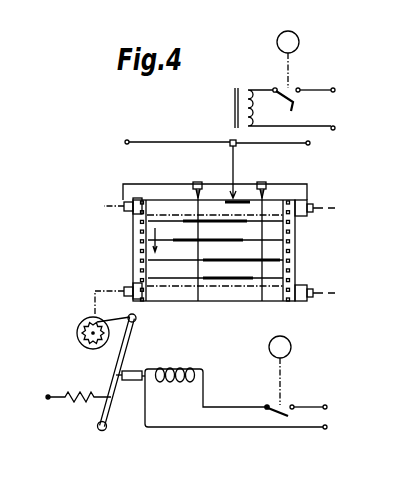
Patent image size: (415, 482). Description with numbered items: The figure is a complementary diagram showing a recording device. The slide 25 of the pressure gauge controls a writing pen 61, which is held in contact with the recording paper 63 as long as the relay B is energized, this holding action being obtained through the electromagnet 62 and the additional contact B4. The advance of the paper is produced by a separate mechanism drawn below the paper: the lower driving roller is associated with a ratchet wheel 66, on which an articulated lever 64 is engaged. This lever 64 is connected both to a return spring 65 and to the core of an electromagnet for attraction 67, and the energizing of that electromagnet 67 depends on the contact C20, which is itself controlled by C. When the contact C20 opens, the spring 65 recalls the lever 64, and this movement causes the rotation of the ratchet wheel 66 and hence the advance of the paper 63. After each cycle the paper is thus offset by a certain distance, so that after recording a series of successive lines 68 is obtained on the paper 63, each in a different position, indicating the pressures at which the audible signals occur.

The relay B is at (279, 43).
The additional contact B4 is at (304, 111).
The electromagnet 62 is at (234, 102).
The slide 25 is at (230, 140).
The writing pen 61 is at (236, 165).
The recording paper 63 is at (270, 232).
The lines 68 is at (189, 220).
The ratchet wheel 66 is at (91, 323).
The articulated lever 64 is at (131, 337).
The return spring 65 is at (82, 388).
The electromagnet for attraction 67 is at (173, 368).
The relay C is at (291, 343).
The contact C20 is at (267, 405).